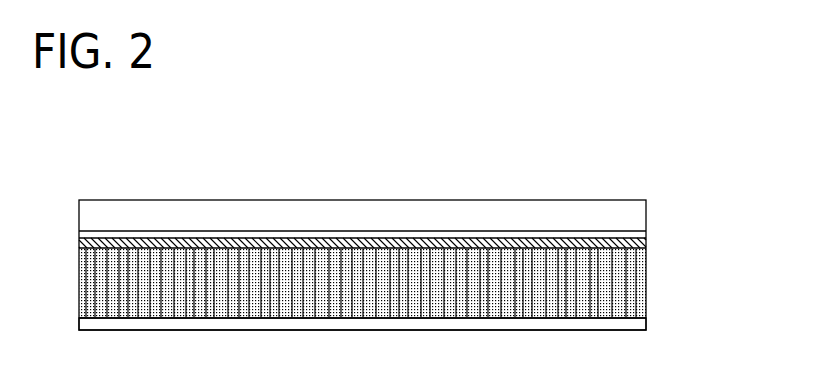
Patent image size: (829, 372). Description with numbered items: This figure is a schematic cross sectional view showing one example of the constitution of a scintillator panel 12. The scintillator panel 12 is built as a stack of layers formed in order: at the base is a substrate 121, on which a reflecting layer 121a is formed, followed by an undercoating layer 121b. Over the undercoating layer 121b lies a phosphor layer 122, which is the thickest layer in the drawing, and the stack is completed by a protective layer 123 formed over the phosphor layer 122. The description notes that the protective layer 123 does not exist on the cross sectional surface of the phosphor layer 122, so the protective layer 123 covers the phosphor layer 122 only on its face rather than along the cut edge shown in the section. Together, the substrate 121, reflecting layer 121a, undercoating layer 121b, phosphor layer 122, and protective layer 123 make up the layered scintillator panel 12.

The scintillator panel 12 is at (355, 143).
The substrate 121 is at (623, 222).
The reflecting layer 121a is at (635, 232).
The undercoating layer 121b is at (650, 242).
The phosphor layer 122 is at (647, 292).
The protective layer 123 is at (645, 323).